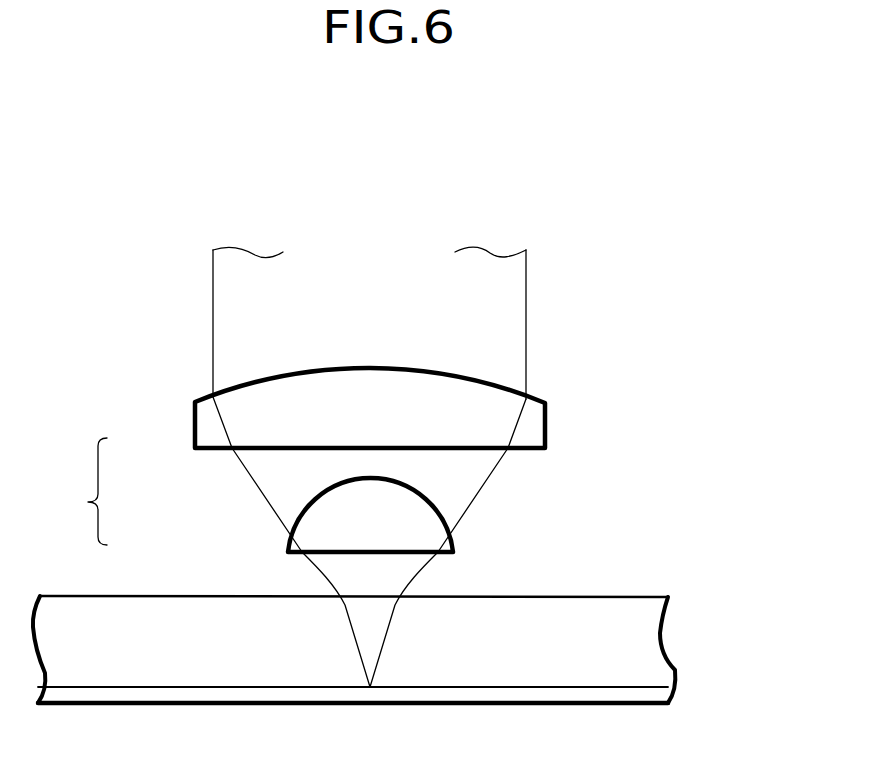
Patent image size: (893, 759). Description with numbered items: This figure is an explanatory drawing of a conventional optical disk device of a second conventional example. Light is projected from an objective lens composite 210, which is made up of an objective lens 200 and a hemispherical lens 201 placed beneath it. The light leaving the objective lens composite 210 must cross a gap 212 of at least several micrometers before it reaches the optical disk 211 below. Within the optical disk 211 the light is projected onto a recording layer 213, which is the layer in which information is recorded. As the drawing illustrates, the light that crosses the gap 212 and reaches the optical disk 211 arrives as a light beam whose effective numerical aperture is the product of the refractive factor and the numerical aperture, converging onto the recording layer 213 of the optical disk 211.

The objective lens 200 is at (477, 400).
The hemispherical lens 201 is at (332, 538).
The objective lens composite 210 is at (65, 491).
The optical disk 211 is at (782, 597).
The gap 212 is at (438, 575).
The recording layer 213 is at (670, 698).